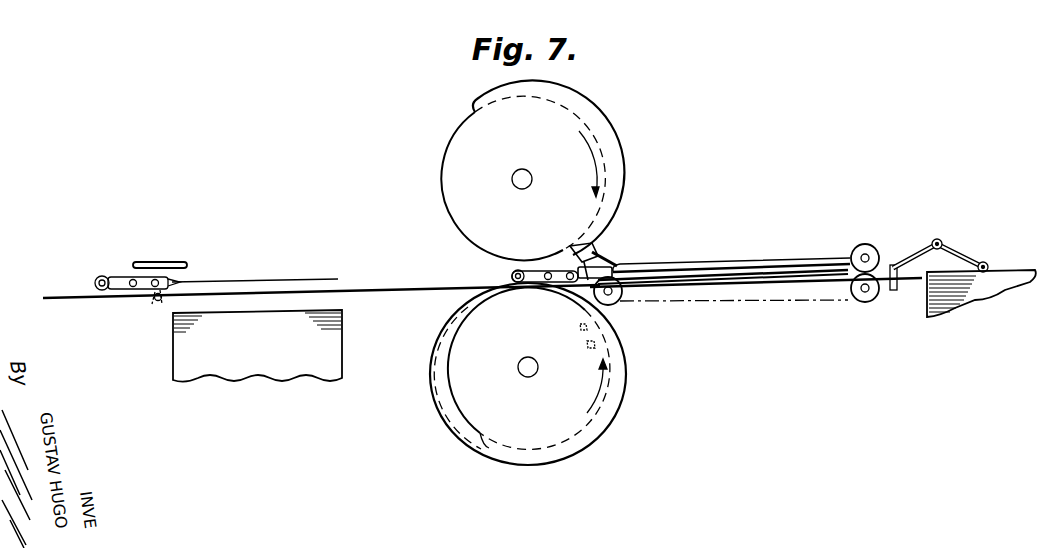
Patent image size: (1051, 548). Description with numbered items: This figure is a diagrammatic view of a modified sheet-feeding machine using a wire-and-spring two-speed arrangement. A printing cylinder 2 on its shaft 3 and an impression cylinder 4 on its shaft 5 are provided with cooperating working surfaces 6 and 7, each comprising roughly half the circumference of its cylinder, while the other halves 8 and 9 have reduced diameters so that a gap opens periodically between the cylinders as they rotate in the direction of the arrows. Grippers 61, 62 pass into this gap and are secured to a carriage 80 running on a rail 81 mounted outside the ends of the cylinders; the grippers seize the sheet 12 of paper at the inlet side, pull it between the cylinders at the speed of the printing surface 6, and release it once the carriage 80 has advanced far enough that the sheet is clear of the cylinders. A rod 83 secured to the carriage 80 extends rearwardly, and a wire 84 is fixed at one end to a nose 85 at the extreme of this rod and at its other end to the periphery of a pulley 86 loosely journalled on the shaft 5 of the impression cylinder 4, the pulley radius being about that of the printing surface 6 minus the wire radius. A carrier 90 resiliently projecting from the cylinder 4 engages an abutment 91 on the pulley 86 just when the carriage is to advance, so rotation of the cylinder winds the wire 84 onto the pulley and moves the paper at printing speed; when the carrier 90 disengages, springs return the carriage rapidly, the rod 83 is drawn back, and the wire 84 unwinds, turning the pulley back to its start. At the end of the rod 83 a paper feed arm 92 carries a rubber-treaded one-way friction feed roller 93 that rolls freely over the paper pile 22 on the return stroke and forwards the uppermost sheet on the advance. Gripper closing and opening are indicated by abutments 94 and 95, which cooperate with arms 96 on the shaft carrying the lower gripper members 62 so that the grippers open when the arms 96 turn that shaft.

The printing cylinder 2 is at (583, 172).
The shaft of the printing cylinder 3 is at (532, 178).
The impression cylinder 4 is at (590, 381).
The shaft of the impression cylinder 5 is at (518, 367).
The working surface of the printing cylinder 6 is at (622, 185).
The working surface of the impression cylinder 7 is at (617, 413).
The reduced-diameter half of the printing cylinder 8 is at (440, 200).
The reduced-diameter half of the impression cylinder 9 is at (447, 350).
The sheet of paper 12 is at (716, 268).
The paper pile 22 is at (973, 300).
The gripper 61 is at (173, 281).
The lower gripper member 62 is at (157, 301).
The carriage 80 is at (505, 272).
The rail 81 is at (388, 288).
The rod 83 is at (768, 272).
The wire 84 is at (825, 262).
The nose 85 is at (896, 263).
The pulley 86 is at (440, 397).
The carrier 90 is at (600, 366).
The abutment 91 is at (578, 333).
The paper feed arm 92 is at (956, 254).
The friction feed roller 93 is at (987, 265).
The abutment 94 is at (594, 251).
The abutment 95 is at (171, 262).
The arm 96 is at (558, 257).